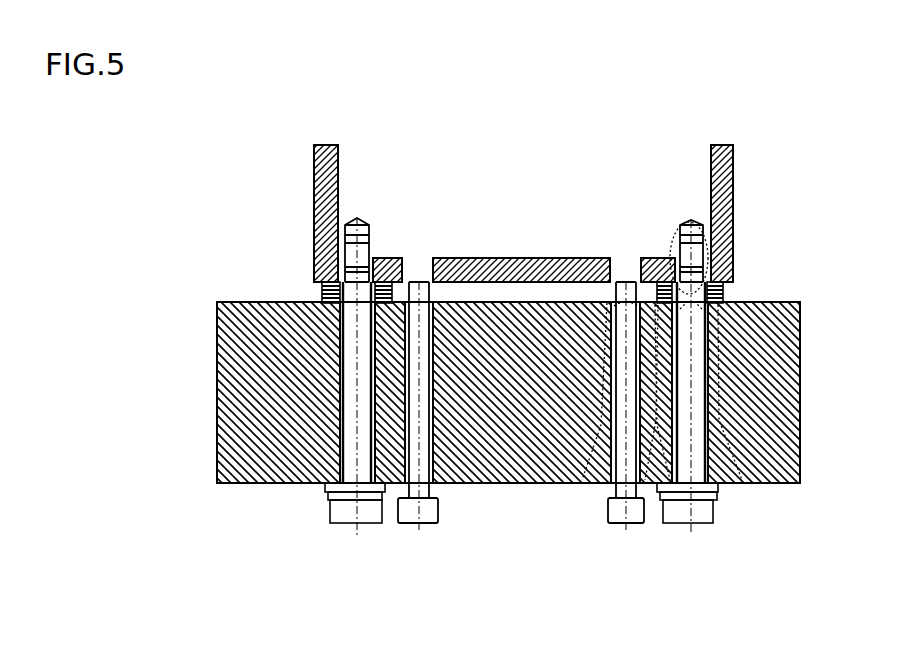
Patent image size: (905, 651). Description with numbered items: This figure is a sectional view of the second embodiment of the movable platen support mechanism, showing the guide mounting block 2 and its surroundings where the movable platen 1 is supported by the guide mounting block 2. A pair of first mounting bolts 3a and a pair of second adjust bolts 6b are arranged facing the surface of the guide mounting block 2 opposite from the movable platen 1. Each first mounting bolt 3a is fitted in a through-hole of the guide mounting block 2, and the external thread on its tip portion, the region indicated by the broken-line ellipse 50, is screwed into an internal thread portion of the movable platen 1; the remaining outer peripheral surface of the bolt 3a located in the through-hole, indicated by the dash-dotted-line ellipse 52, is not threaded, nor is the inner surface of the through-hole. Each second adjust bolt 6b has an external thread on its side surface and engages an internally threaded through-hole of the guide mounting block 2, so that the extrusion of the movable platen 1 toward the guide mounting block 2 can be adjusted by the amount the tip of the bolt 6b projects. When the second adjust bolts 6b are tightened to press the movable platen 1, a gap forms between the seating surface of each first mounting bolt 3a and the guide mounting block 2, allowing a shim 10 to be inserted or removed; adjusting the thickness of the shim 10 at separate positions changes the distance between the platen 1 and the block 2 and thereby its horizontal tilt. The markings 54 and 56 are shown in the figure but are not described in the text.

The movable platen 1 is at (367, 197).
The guide mounting block 2 is at (268, 332).
The first mounting bolt 3a is at (712, 528).
The second adjust bolt 6b is at (617, 525).
The shim 10 is at (720, 497).
The broken-line ellipse 50 is at (718, 236).
The dash-dotted-line ellipse 52 is at (722, 427).
The hole outline 54 is at (575, 483).
The through holes 56 is at (625, 258).